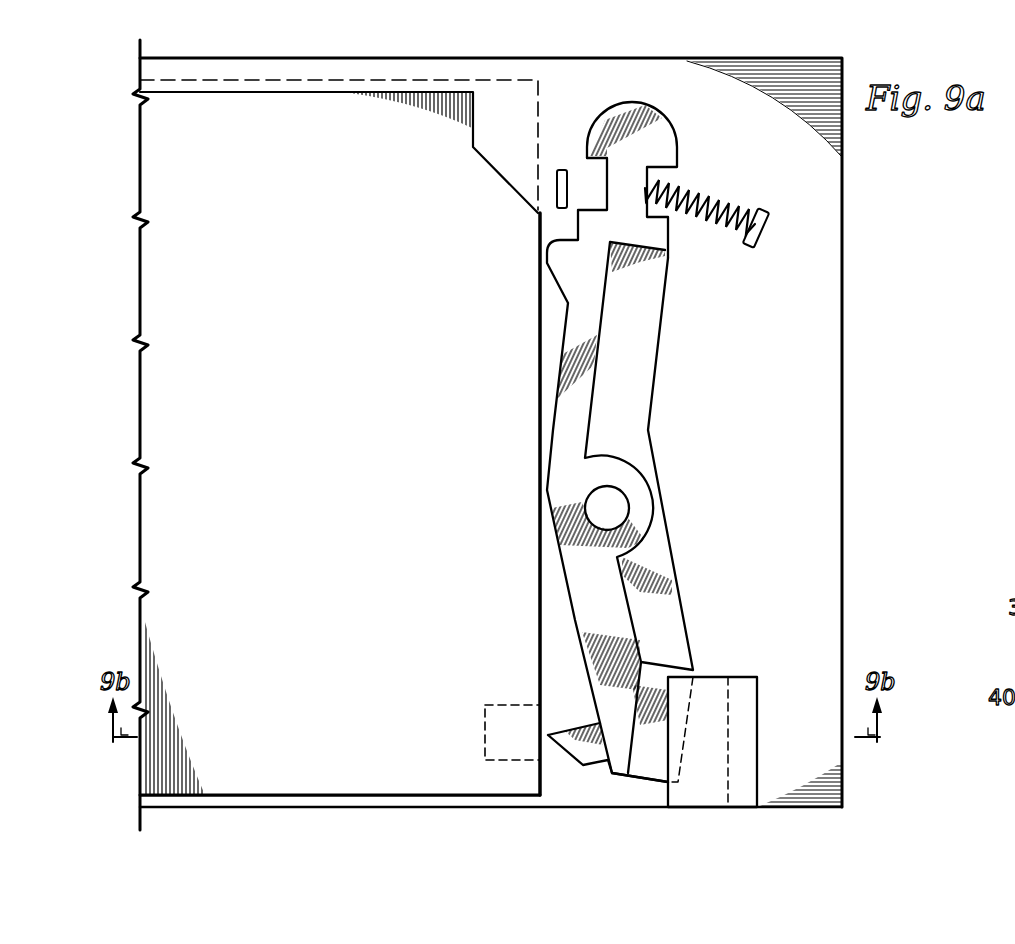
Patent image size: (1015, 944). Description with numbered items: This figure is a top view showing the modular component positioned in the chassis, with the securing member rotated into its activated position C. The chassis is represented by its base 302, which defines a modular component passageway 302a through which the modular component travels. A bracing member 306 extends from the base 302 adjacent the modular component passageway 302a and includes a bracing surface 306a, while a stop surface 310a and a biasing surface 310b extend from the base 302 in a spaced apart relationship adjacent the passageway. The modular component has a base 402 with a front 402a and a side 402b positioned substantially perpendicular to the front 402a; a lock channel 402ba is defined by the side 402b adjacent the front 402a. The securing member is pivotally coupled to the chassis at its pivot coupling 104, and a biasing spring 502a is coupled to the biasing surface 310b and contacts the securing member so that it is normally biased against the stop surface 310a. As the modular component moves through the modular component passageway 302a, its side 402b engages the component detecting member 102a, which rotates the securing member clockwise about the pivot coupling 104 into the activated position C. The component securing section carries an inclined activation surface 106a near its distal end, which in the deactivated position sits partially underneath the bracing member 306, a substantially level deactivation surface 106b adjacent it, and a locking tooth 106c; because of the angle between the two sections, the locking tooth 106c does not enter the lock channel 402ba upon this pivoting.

The component detecting member 102a is at (555, 262).
The pivot coupling 104 is at (608, 507).
The inclined activation surface 106a is at (655, 675).
The deactivation surface 106b is at (617, 767).
The locking tooth 106c is at (573, 750).
The base 302 is at (792, 413).
The modular component passageway 302a is at (517, 80).
The bracing member 306 is at (752, 702).
The bracing surface 306a is at (667, 793).
The stop surface 310a is at (552, 190).
The biasing surface 310b is at (765, 210).
The base 402 is at (358, 428).
The front 402a is at (318, 797).
The side 402b is at (548, 637).
The lock channel 402ba is at (485, 735).
The biasing spring 502a is at (705, 190).
The activated position C is at (760, 328).